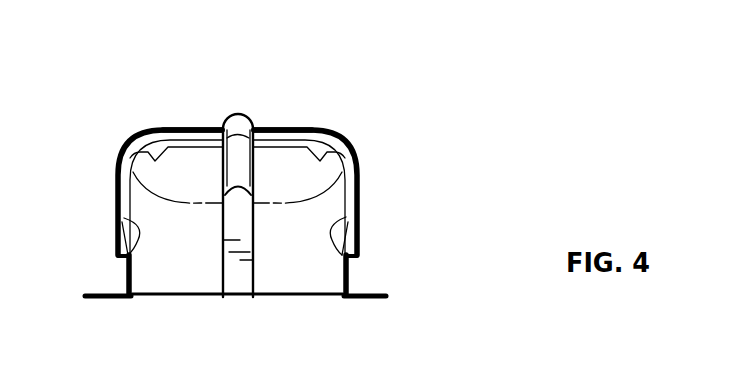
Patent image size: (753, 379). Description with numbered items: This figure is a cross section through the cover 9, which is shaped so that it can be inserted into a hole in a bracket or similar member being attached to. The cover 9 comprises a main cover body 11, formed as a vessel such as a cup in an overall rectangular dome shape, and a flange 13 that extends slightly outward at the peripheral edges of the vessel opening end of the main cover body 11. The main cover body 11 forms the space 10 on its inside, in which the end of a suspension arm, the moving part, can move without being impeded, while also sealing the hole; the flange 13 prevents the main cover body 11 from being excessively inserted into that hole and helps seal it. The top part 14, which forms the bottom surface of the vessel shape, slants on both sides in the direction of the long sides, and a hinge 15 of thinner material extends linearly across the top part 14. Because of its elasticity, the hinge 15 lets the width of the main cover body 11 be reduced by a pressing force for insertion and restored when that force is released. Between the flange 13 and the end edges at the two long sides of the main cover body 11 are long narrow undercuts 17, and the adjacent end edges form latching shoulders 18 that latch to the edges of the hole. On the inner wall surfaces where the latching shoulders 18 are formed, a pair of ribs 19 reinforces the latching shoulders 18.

The cover 9 is at (372, 118).
The space 10 is at (191, 248).
The main cover body 11 is at (116, 173).
The flange 13 is at (105, 302).
The top part 14 is at (185, 126).
The hinge 15 is at (237, 112).
The undercut 17 is at (127, 279).
The latching shoulder 18 is at (120, 260).
The rib 19 is at (123, 218).